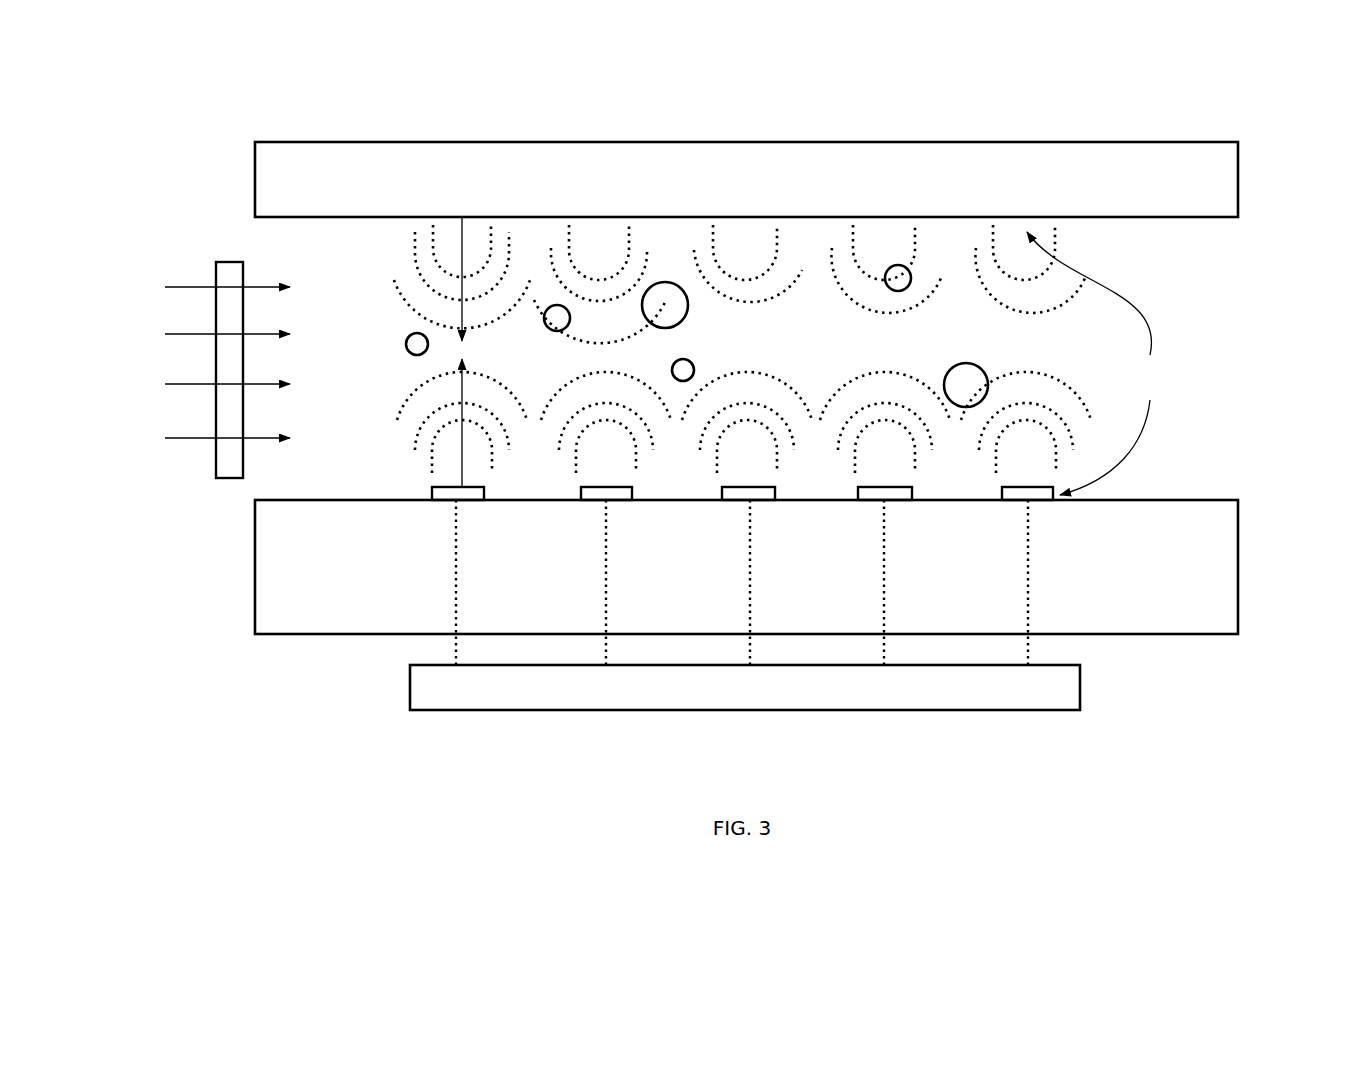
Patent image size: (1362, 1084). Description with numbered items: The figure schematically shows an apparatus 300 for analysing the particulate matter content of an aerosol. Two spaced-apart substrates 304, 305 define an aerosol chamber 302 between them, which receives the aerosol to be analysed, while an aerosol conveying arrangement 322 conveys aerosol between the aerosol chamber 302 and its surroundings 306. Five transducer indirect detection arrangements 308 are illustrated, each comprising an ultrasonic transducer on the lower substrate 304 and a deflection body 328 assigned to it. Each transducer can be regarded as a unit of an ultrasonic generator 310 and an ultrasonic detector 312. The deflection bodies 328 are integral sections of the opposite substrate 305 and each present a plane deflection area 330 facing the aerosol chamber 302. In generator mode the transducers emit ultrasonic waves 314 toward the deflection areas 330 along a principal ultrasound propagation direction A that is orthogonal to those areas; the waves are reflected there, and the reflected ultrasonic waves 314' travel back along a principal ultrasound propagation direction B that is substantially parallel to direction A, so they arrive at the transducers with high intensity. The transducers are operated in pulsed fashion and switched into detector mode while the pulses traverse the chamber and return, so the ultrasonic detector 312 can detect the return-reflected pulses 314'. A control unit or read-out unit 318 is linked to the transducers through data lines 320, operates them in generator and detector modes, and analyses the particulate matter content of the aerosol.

The apparatus for analysing the particulate matter content of an aerosol 300 is at (1150, 117).
The aerosol chamber 302 is at (1214, 370).
The substrate 304 is at (1200, 572).
The substrate 305 is at (1216, 197).
The surroundings 306 is at (1299, 416).
The transducer indirect detection arrangement 308 is at (1098, 363).
The ultrasonic generator 310 is at (468, 495).
The ultrasonic detector 312 is at (448, 505).
The ultrasonic waves 314 is at (706, 422).
The reflected ultrasonic waves 314' is at (697, 284).
The control unit or read-out unit 318 is at (1055, 685).
The data lines 320 is at (456, 618).
The aerosol conveying arrangement 322 is at (230, 258).
The deflection body 328 is at (483, 168).
The deflection area 330 is at (456, 214).
The principal ultrasound propagation direction A is at (427, 433).
The principal ultrasound propagation direction B is at (417, 250).